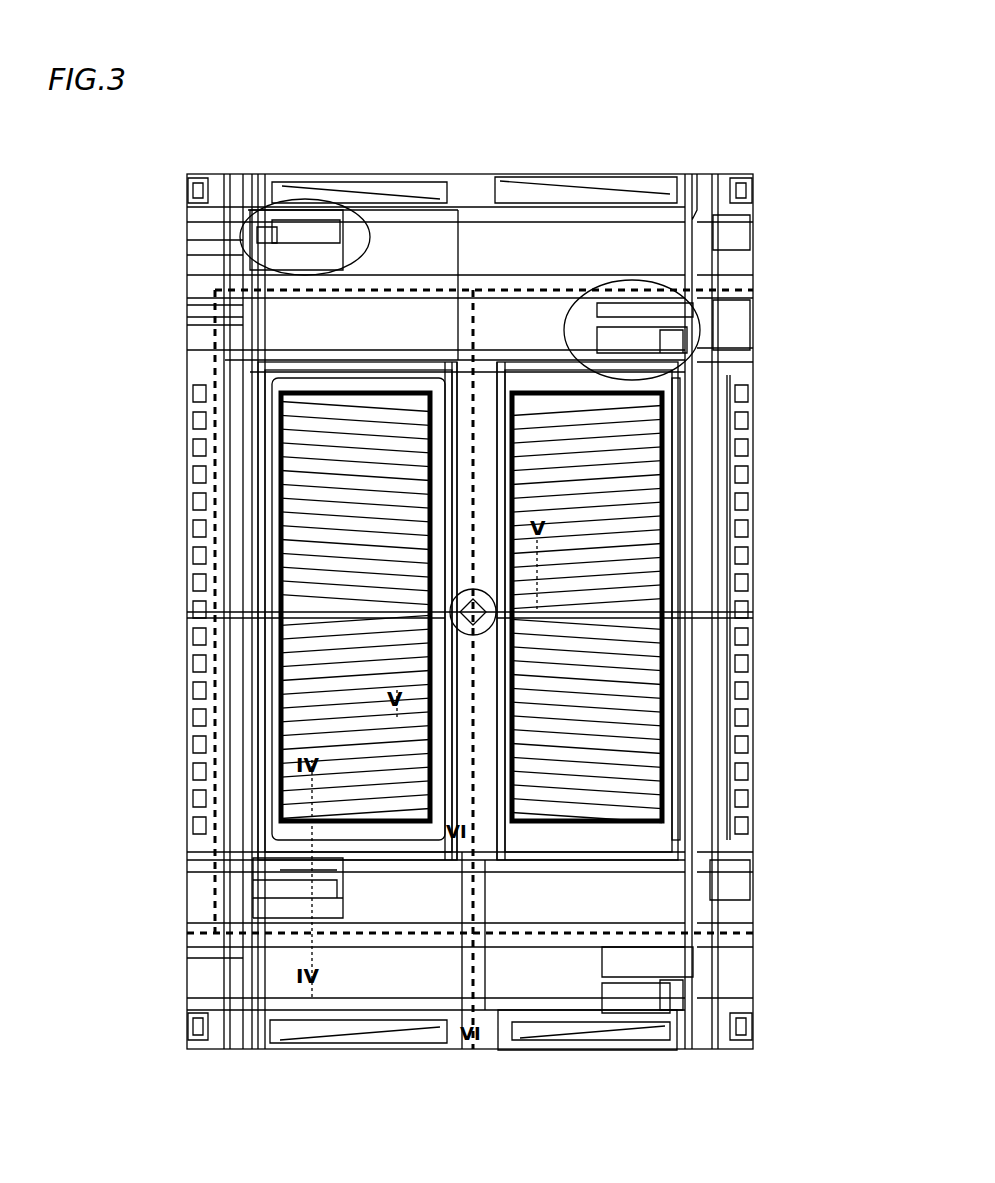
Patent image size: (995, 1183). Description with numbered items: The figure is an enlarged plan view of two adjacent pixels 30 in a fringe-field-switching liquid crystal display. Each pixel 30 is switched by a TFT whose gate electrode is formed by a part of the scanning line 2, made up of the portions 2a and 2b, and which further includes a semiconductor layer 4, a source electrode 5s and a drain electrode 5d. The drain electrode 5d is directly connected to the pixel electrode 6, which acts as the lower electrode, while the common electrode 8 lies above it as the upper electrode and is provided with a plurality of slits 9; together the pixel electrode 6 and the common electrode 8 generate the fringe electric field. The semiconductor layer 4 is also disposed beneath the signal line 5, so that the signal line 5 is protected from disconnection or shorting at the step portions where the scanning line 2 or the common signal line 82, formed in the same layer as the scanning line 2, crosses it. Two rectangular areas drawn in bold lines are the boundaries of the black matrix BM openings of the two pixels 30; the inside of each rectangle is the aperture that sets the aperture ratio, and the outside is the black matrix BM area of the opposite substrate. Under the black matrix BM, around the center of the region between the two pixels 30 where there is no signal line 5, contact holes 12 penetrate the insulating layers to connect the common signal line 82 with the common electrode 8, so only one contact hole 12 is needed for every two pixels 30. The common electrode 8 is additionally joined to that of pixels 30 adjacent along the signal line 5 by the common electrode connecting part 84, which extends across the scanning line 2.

The scanning line 2 is at (70, 967).
The scanning line portion 2a is at (280, 897).
The scanning line portion 2b is at (280, 963).
The semiconductor layer 4 is at (263, 893).
The signal line 5 is at (695, 1025).
The drain electrode 5d is at (303, 215).
The source electrode 5s is at (293, 257).
The pixel electrode 6 is at (607, 553).
The common electrode 8 is at (686, 444).
The slits 9 is at (660, 605).
The contact holes 12 is at (700, 628).
The pixel 30 is at (362, 933).
The common signal line 82 is at (600, 632).
The common electrode connecting part 84 is at (468, 868).
The black matrix BM is at (275, 582).
The thin film transistor TFT is at (680, 365).